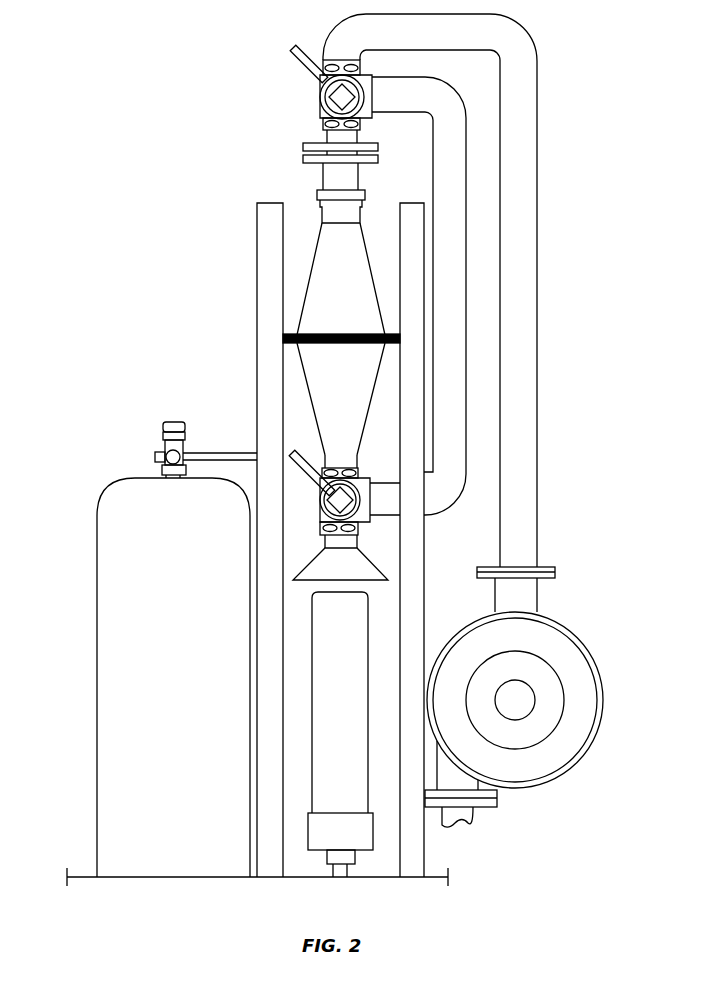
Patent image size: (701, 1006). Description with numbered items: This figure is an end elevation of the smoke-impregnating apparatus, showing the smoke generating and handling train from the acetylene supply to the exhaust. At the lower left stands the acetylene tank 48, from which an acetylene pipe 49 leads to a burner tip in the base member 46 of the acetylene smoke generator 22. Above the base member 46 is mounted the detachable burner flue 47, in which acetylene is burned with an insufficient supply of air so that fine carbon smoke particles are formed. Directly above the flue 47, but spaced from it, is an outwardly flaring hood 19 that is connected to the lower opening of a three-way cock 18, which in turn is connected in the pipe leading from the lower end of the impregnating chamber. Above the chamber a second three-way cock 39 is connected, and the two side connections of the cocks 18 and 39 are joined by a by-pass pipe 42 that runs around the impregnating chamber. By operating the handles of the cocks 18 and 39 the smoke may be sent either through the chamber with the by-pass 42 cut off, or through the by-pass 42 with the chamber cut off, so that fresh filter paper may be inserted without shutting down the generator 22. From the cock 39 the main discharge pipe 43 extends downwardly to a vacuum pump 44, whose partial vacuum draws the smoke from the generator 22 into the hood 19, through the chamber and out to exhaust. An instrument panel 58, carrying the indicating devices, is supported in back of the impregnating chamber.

The three-way cock 18 is at (320, 500).
The outwardly flaring hood 19 is at (313, 573).
The acetylene smoke generator 22 is at (310, 661).
The three-way cock 39 is at (320, 102).
The by-pass pipe 42 is at (452, 298).
The main discharge pipe 43 is at (520, 197).
The vacuum pump 44 is at (557, 753).
The base member 46 is at (357, 843).
The detachable burner flue 47 is at (333, 738).
The acetylene tank 48 is at (110, 605).
The acetylene pipe 49 is at (240, 455).
The instrument panel 58 is at (413, 320).